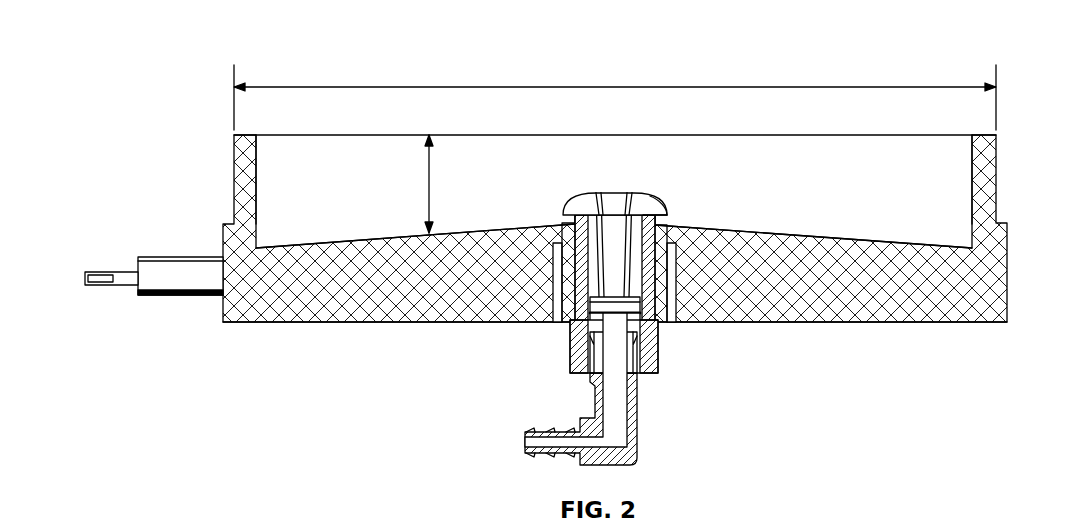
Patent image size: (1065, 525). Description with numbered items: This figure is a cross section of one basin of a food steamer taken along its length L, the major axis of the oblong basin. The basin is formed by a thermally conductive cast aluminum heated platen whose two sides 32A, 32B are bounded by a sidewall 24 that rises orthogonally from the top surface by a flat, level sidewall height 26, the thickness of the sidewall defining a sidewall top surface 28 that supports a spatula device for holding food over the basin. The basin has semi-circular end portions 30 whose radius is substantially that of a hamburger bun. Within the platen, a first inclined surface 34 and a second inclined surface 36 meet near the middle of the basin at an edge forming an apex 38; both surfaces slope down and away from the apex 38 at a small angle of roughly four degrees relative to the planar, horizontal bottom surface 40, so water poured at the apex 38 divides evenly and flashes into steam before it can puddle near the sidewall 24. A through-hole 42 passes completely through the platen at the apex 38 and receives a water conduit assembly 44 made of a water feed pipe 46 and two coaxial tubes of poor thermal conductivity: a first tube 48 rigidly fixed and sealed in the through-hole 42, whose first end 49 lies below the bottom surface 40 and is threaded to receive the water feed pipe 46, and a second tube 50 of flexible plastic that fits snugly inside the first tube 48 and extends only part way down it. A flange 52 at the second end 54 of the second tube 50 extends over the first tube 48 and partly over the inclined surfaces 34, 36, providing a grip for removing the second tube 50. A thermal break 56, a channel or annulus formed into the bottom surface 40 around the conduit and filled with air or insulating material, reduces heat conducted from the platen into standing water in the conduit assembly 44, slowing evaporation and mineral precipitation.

The sidewall 24 is at (234, 178).
The sidewall height 26 is at (429, 178).
The sidewall top surface 28 is at (245, 135).
The semi-circular end portion 30 is at (330, 135).
The first side 32A is at (295, 52).
The second side 32B is at (273, 494).
The first inclined surface 34 is at (457, 233).
The second inclined surface 36 is at (793, 235).
The apex 38 is at (615, 193).
The bottom surface 40 is at (360, 325).
The through-hole 42 is at (572, 233).
The water conduit assembly 44 is at (500, 193).
The water feed pipe 46 is at (550, 432).
The first tube 48 is at (656, 277).
The first end 49 is at (652, 375).
The second tube 50 is at (668, 217).
The flange 52 is at (656, 212).
The second end 54 is at (598, 197).
The thermal break 56 is at (557, 323).
The length L is at (523, 87).